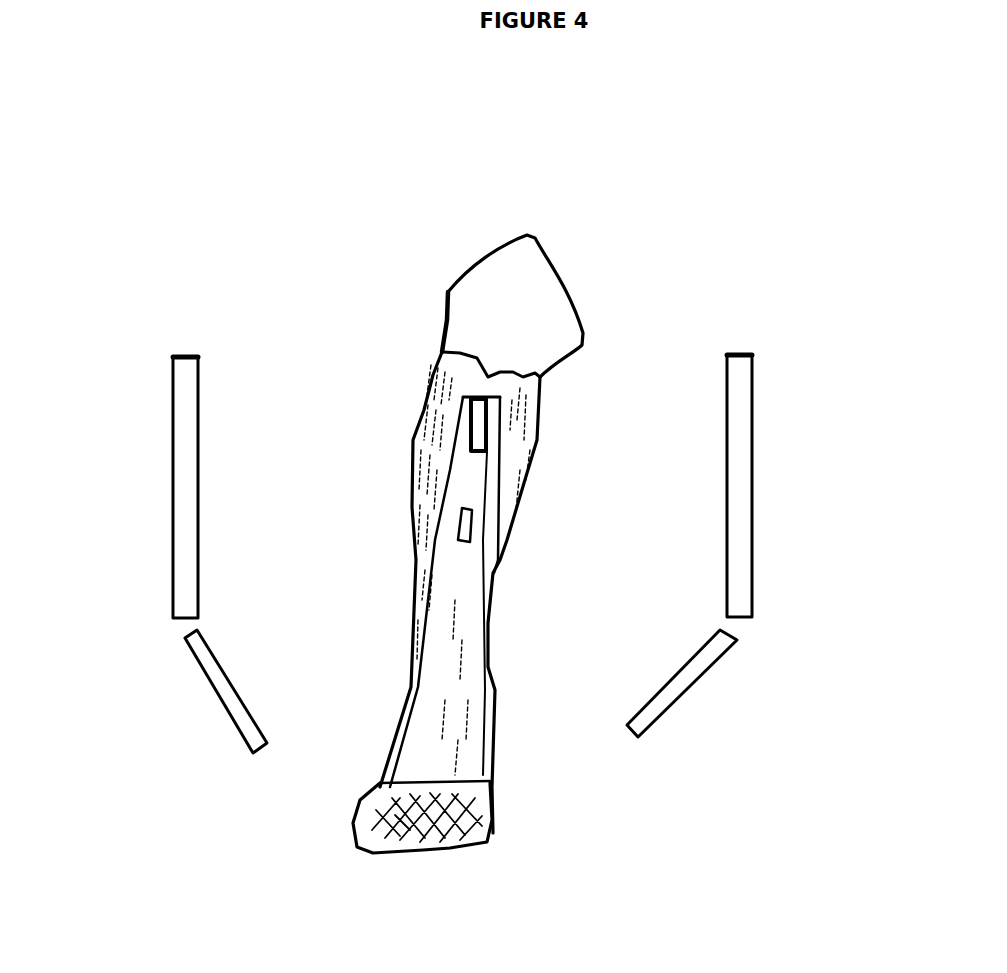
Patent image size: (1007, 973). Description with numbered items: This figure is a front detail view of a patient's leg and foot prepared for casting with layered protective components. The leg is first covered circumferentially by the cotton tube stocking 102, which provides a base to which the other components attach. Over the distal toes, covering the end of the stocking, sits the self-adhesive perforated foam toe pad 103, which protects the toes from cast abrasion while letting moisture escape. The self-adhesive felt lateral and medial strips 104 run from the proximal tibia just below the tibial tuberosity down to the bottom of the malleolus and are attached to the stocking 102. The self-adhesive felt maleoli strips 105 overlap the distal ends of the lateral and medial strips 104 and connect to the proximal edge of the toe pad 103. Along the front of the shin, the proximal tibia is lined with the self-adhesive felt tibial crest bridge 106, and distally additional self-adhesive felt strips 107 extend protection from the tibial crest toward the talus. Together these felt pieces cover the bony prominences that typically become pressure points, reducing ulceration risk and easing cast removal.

The cotton tube stocking 102 is at (422, 413).
The self-adhesive perforated foam toe pad 103 is at (450, 850).
The self-adhesive felt lateral and medial strips 104 is at (173, 468).
The self-adhesive felt maleoli strips 105 is at (210, 682).
The self-adhesive felt tibial crest bridge 106 is at (488, 397).
The additional self-adhesive felt strips 107 is at (462, 522).